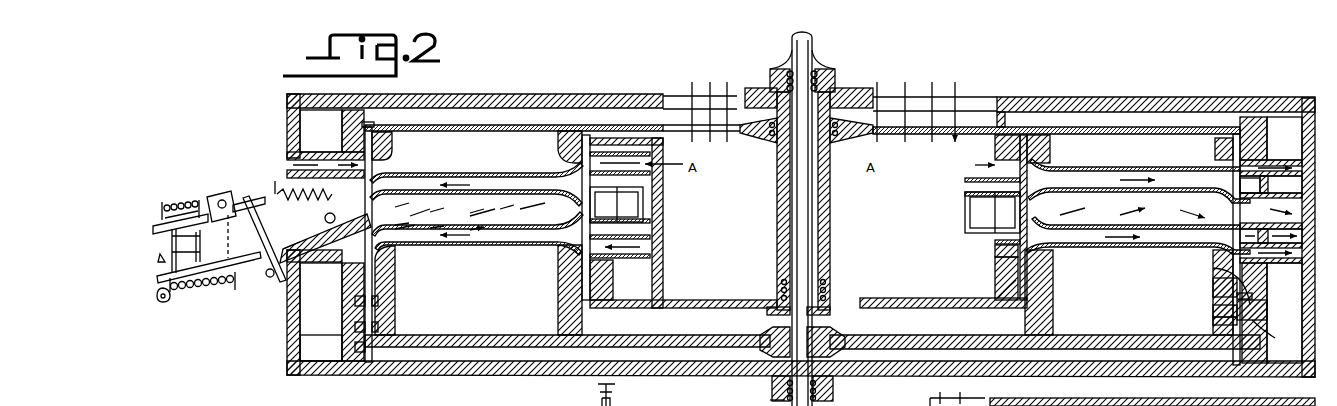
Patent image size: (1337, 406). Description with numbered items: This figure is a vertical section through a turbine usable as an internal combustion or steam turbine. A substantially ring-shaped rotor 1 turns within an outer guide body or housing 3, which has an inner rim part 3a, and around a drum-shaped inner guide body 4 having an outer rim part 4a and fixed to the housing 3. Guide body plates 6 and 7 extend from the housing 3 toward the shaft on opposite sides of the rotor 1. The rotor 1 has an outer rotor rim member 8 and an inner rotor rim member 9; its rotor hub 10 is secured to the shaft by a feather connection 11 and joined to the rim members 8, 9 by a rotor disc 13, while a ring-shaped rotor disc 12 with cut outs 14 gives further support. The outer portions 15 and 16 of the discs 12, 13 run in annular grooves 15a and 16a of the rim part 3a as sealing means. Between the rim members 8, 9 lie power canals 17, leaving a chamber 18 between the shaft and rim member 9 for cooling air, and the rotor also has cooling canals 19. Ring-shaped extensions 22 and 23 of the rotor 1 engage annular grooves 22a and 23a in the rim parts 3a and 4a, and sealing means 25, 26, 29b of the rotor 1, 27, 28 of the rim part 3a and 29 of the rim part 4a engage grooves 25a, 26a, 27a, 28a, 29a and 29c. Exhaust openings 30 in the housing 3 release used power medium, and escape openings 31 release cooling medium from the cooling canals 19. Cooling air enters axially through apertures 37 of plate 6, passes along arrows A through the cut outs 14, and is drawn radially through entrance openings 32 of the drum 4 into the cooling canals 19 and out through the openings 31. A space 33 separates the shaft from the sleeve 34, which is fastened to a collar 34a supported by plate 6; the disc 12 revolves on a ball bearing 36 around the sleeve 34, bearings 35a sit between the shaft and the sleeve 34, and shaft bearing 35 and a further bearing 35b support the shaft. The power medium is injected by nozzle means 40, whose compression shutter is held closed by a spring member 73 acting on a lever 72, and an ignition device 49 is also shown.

The rotor 1 is at (423, 281).
The outer guide body 3 is at (1314, 116).
The inner rim part 3a is at (350, 308).
The inner guide body 4 is at (660, 280).
The outer rim part 4a is at (610, 292).
The guide body plate 6 is at (522, 103).
The guide body plate 7 is at (460, 372).
The outer rotor rim member 8 is at (400, 266).
The inner rotor rim member 9 is at (558, 265).
The rotor hub 10 is at (838, 327).
The feather connection 11 is at (770, 330).
The ring-shaped rotor disc 12 is at (452, 124).
The rotor disc 13 is at (940, 345).
The cut outs 14 is at (920, 150).
The outer portion of disc 15 is at (370, 124).
The annular groove 15a is at (344, 146).
The outer portion of disc 16 is at (370, 362).
The annular groove 16a is at (345, 350).
The power canals 17 is at (420, 208).
The chamber 18 is at (809, 228).
The cooling canals 19 is at (504, 183).
The extension 22 is at (392, 175).
The annular groove 22a is at (335, 188).
The extension 23 is at (560, 252).
The annular groove 23a is at (640, 182).
The sealing means 25 is at (1250, 297).
The groove 25a is at (1225, 287).
The sealing means 26 is at (1256, 320).
The groove 26a is at (1276, 334).
The sealing means 27 is at (1225, 311).
The groove 27a is at (1220, 320).
The sealing means 28 is at (1262, 145).
The groove 28a is at (1224, 136).
The sealing means 29 is at (1052, 150).
The groove 29a is at (1040, 128).
The sealing means 29b is at (1005, 258).
The groove 29c is at (1010, 300).
The exhaust openings 30 is at (1326, 208).
The escape openings 31 is at (290, 164).
The entrance openings 32 is at (650, 246).
The space 33 is at (845, 97).
The sleeve 34 is at (830, 202).
The collar 34a is at (838, 82).
The shaft bearing 35 is at (812, 68).
The bearings 35a is at (828, 285).
The lower bearing 35b is at (830, 388).
The ball bearing 36 is at (775, 145).
The apertures 37 is at (668, 100).
The nozzle means 40 is at (394, 222).
The ignition device 49 is at (590, 405).
The lever 72 is at (766, 400).
The spring member 73 is at (698, 405).